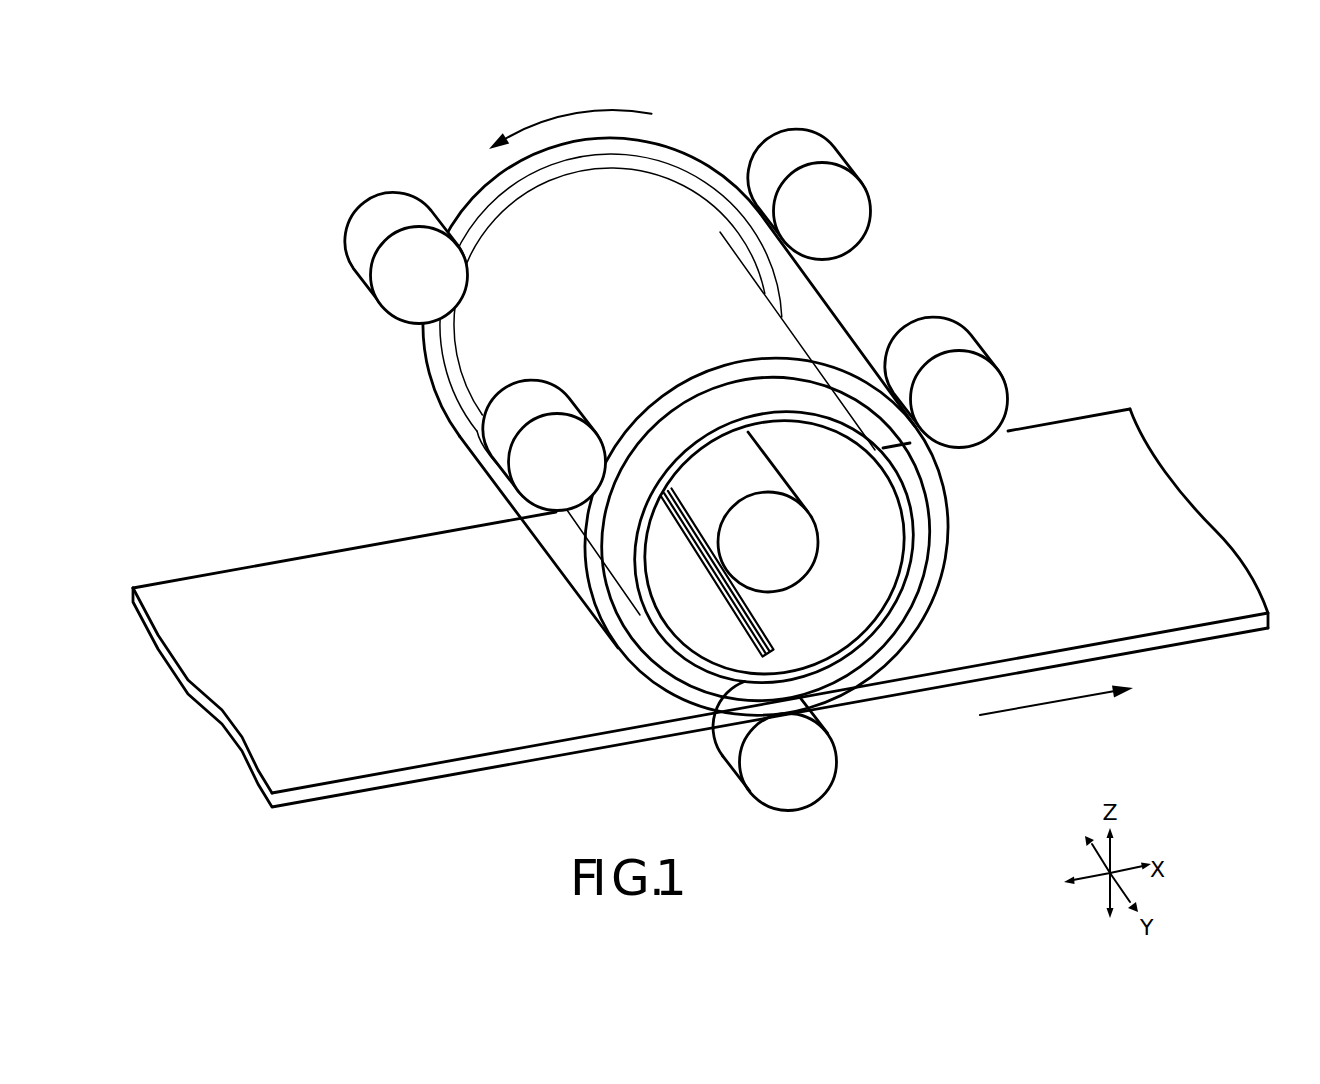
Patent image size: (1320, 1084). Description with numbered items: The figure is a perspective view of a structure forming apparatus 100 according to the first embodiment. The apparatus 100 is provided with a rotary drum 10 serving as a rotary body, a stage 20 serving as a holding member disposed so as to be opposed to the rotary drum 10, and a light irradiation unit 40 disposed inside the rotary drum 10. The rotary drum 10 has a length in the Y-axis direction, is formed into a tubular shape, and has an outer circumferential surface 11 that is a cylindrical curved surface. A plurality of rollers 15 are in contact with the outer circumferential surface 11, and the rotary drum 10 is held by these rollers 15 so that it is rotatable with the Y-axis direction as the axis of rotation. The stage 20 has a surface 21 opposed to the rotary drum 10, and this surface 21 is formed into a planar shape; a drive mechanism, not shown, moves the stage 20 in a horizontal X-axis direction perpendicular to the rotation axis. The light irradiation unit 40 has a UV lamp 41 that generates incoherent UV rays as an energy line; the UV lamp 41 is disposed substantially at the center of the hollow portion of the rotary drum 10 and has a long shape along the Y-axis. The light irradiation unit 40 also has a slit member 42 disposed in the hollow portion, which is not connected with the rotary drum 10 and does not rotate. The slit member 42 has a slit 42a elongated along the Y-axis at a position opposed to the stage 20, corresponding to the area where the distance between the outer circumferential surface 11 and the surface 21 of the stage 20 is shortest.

The structure forming apparatus 100 is at (296, 134).
The rotary drum 10 is at (675, 152).
The outer circumferential surface 11 is at (557, 540).
The rollers 15 is at (388, 205).
The stage 20 is at (300, 742).
The surface 21 is at (407, 747).
The light irradiation unit 40 is at (972, 252).
The UV lamp 41 is at (755, 463).
The slit member 42 is at (832, 410).
The slit 42a is at (767, 625).